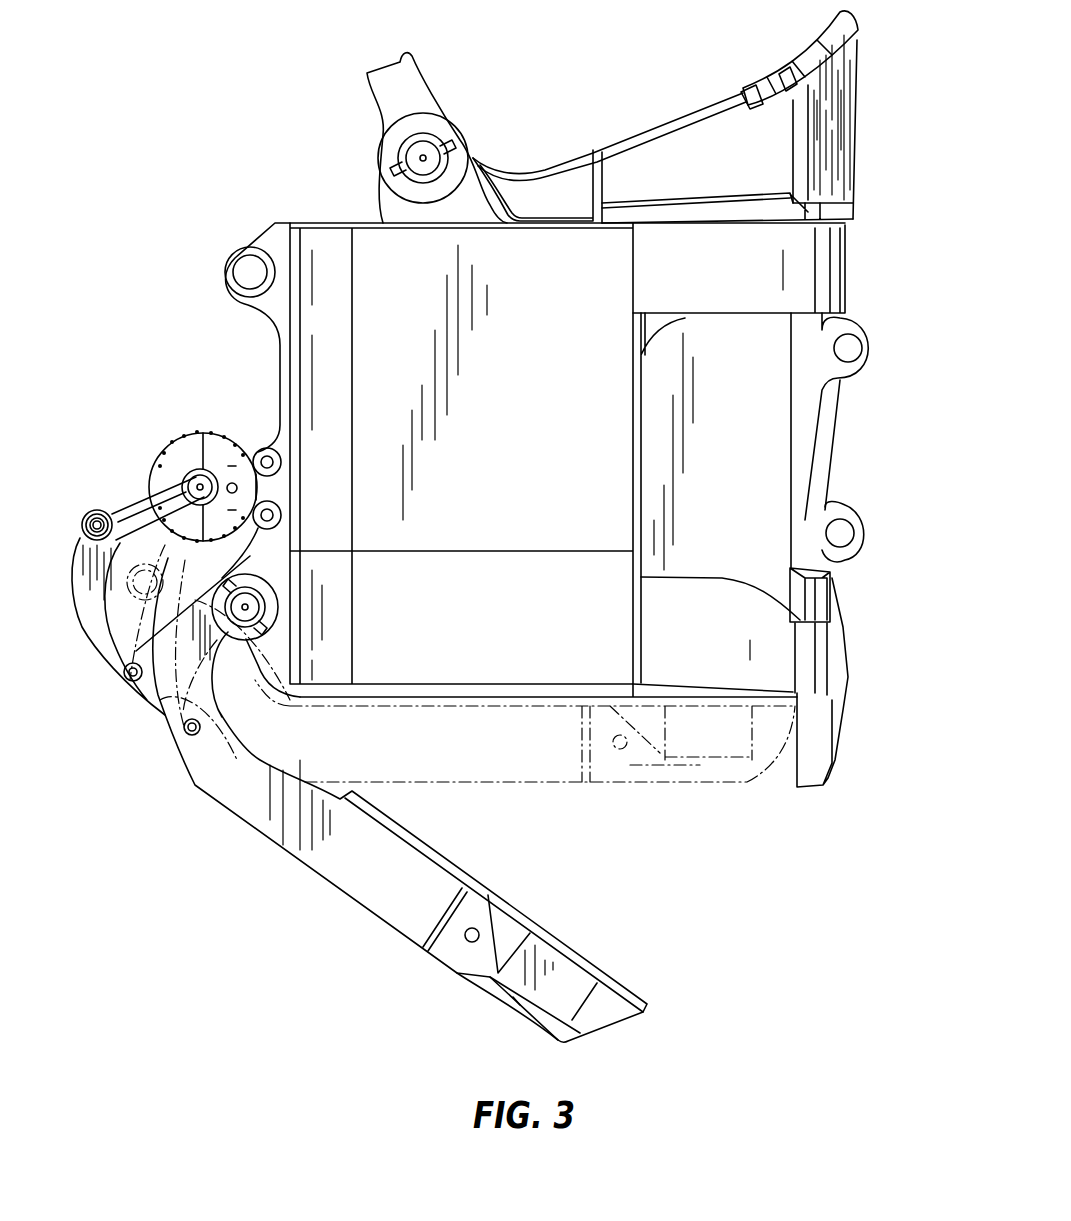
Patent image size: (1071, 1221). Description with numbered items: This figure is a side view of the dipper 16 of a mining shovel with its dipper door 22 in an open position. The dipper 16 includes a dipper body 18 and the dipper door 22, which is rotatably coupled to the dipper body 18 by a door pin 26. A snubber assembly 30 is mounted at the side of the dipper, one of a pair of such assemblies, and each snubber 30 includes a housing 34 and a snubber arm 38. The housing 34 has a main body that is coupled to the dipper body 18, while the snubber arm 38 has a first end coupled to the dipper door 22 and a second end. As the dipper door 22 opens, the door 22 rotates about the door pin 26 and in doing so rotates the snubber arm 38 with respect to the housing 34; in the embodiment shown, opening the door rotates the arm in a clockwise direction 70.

The dipper 16 is at (132, 256).
The dipper body 18 is at (762, 460).
The dipper door 22 is at (390, 885).
The door pin 26 is at (250, 636).
The snubber assembly 30 is at (98, 464).
The housing 34 is at (240, 440).
The snubber arm 38 is at (124, 549).
The clockwise direction 70 is at (180, 413).